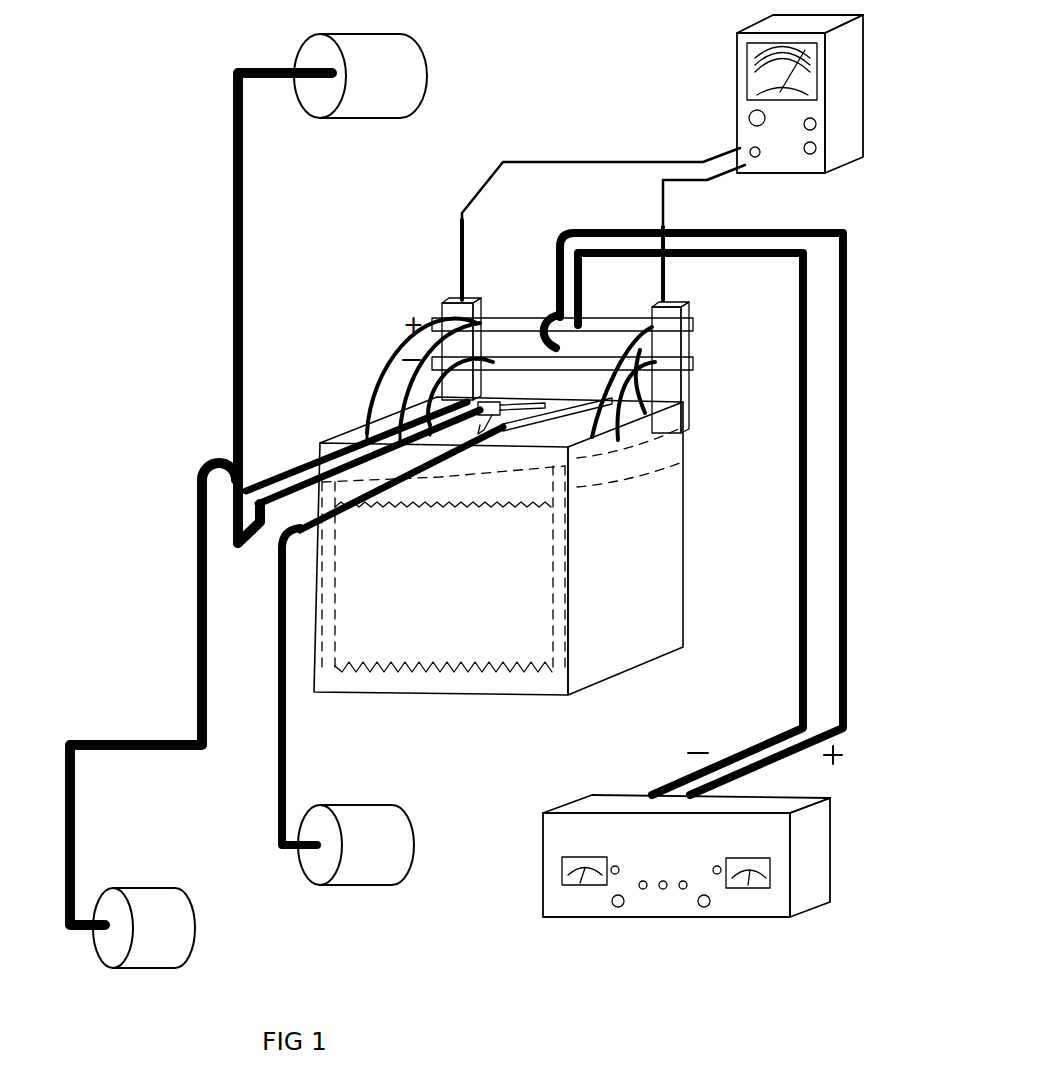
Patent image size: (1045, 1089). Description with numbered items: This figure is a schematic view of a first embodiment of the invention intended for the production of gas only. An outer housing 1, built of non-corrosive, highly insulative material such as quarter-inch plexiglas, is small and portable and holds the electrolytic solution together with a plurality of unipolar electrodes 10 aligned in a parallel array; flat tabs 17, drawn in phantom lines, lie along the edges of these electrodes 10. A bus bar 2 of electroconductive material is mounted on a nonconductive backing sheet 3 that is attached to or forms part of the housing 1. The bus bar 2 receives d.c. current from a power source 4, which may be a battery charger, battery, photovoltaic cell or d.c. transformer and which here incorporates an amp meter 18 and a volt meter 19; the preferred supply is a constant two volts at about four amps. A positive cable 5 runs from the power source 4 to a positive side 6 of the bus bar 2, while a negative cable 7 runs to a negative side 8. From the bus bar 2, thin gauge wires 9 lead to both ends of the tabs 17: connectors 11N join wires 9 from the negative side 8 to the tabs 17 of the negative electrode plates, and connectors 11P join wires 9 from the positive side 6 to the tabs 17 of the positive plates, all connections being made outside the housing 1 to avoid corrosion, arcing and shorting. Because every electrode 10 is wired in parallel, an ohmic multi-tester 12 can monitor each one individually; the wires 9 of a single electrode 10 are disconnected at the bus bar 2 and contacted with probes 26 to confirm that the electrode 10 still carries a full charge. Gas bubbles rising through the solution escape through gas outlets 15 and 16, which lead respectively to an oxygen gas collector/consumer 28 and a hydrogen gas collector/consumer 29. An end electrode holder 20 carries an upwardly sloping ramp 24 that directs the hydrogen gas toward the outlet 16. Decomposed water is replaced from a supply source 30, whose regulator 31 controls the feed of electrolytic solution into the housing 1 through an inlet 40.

The outer housing 1 is at (660, 553).
The bus bar 2 is at (513, 367).
The nonconductive backing sheet 3 is at (458, 300).
The power source 4 is at (757, 920).
The positive cable 5 is at (848, 625).
The positive side of the bus bar 6 is at (582, 322).
The negative cable 7 is at (796, 652).
The negative side of the bus bar 8 is at (562, 370).
The wires 9 is at (410, 345).
The unipolar electrodes 10 is at (478, 662).
The connectors 11N is at (378, 440).
The connectors 11P is at (418, 428).
The ohmic multi-tester 12 is at (845, 158).
The gas outlet 15 is at (200, 490).
The gas outlet 16 is at (284, 596).
The flat tabs 17 is at (328, 440).
The amp meter 18 is at (770, 872).
The volt meter 19 is at (575, 888).
The end electrode holder 20 is at (318, 453).
The upwardly sloping ramp 24 is at (240, 527).
The probes 26 is at (460, 240).
The oxygen gas collector/consumer 28 is at (152, 968).
The hydrogen gas collector/consumer 29 is at (375, 890).
The supply source 30 is at (427, 87).
The regulator 31 is at (498, 402).
The inlet 40 is at (482, 432).